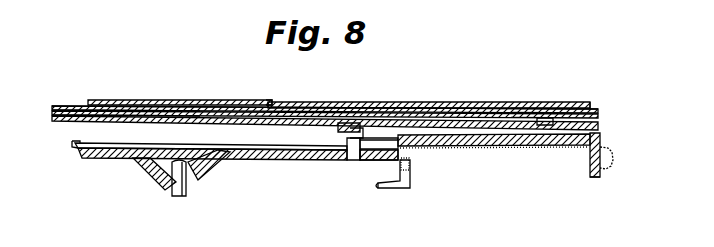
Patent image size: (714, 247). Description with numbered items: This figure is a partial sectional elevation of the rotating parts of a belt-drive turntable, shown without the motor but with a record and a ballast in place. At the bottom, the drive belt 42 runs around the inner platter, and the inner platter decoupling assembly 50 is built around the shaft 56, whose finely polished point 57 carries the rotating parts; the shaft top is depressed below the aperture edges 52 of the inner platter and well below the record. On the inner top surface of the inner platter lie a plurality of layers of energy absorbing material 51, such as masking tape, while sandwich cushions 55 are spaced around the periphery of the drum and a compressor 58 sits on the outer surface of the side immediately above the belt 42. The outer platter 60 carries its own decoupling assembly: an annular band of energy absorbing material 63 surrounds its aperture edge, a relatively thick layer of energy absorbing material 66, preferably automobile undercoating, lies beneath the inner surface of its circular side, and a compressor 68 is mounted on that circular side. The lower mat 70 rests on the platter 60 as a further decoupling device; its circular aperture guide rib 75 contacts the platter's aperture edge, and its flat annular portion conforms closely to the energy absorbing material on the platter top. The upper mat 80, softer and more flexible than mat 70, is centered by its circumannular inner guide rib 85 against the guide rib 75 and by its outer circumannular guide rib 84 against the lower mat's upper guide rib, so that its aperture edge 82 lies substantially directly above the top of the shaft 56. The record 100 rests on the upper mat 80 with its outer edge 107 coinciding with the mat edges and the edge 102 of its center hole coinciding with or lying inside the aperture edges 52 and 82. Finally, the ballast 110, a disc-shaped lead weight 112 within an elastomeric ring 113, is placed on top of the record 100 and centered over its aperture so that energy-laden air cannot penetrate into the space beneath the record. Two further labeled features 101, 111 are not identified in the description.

The record 100 is at (428, 103).
The outer skin layer 101 is at (79, 104).
The edge of record aperture 102 is at (178, 107).
The outer edge of record 107 is at (593, 108).
The ballast 110 is at (272, 101).
The inner layer 111 is at (147, 126).
The disc-shaped lead weight 112 is at (152, 100).
The elastomeric ring 113 is at (270, 101).
The upper mat 80 is at (601, 111).
The aperture edge of upper mat 82 is at (181, 127).
The outer circumannular guide rib 84 is at (537, 121).
The circumannular inner guide rib 85 is at (347, 126).
The lower mat 70 is at (601, 124).
The compressor 68 is at (613, 155).
The thick layer of energy absorbing material 66 is at (558, 150).
The outer platter 60 is at (613, 167).
The annular band of energy absorbing material 63 is at (399, 144).
The compressor 58 is at (409, 164).
The finely polished point 57 is at (390, 186).
The sandwich cushions 55 is at (372, 150).
The circular aperture guide rib 75 is at (347, 140).
The inner platter decoupling assembly 50 is at (228, 170).
The layers of energy absorbing material 51 is at (72, 143).
The aperture edges 52 is at (153, 174).
The shaft 56 is at (182, 195).
The belt 42 is at (409, 182).